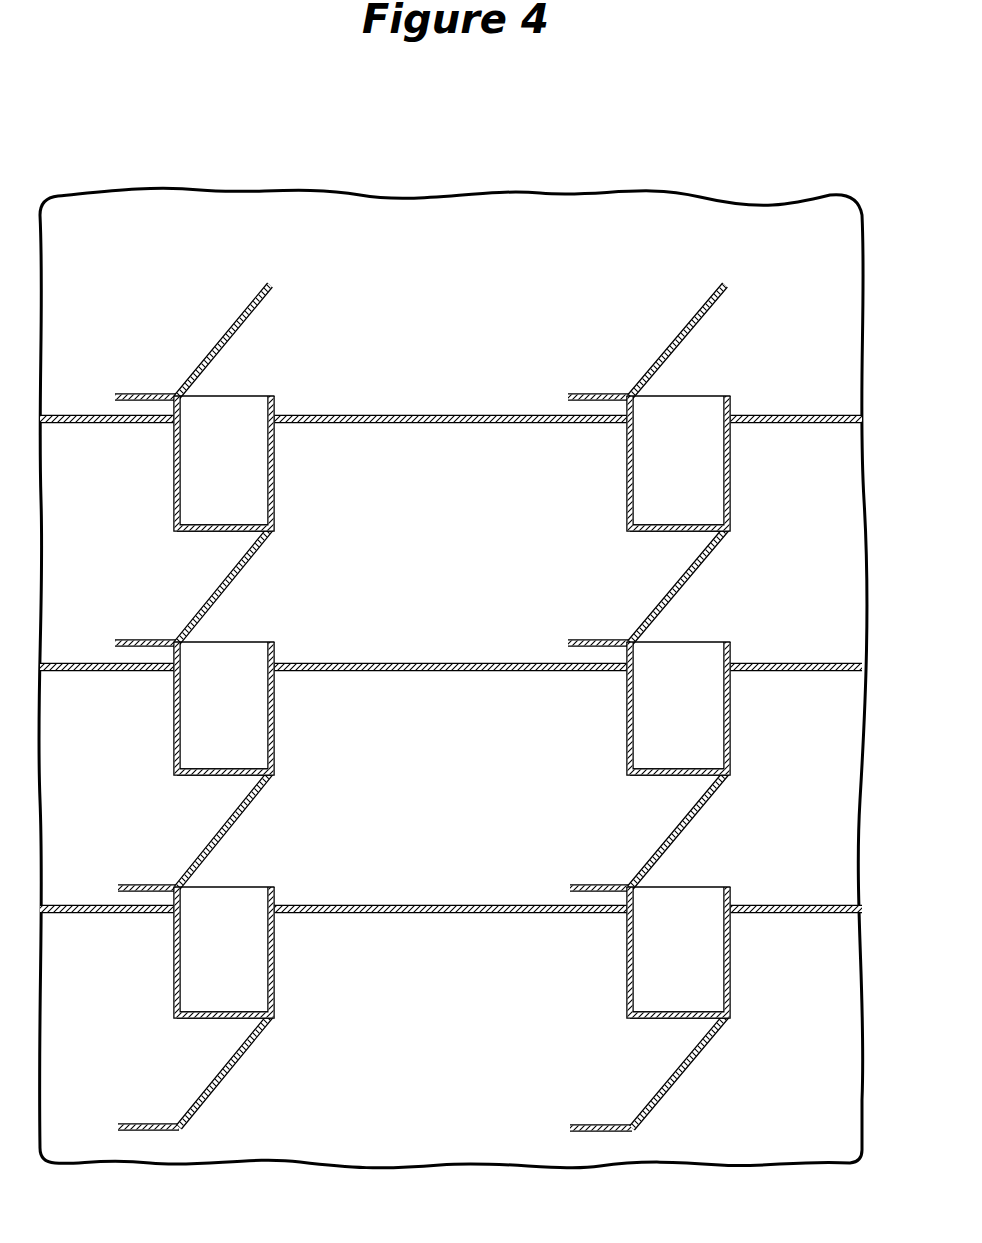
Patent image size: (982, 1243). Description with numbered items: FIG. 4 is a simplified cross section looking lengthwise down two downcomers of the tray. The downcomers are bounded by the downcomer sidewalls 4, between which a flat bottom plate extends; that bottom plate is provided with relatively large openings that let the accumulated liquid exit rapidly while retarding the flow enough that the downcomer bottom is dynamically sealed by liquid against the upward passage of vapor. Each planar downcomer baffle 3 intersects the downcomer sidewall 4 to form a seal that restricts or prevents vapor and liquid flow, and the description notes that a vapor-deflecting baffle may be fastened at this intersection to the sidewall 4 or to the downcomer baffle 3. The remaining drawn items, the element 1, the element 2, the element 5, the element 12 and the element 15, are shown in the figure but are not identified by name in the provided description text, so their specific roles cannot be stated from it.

The panel 1 is at (443, 190).
The sheet 2 is at (490, 416).
The downcomer baffle 3 is at (237, 322).
The downcomer sidewall 4 is at (174, 490).
The flange 5 is at (272, 394).
The channel bottom 12 is at (205, 533).
The tab 15 is at (158, 396).